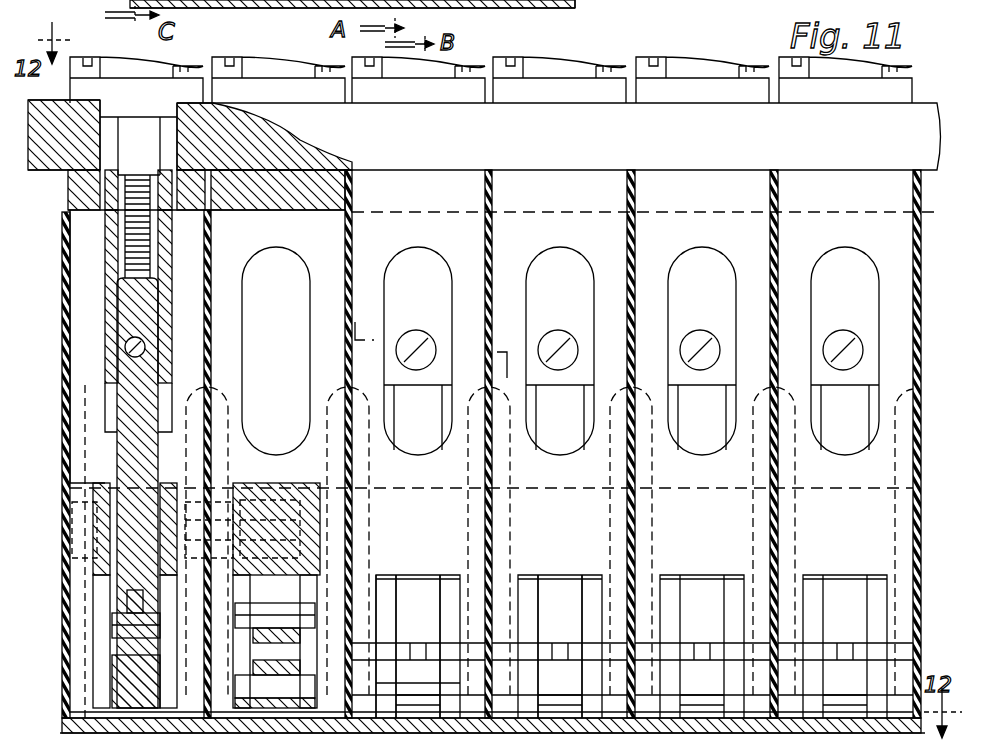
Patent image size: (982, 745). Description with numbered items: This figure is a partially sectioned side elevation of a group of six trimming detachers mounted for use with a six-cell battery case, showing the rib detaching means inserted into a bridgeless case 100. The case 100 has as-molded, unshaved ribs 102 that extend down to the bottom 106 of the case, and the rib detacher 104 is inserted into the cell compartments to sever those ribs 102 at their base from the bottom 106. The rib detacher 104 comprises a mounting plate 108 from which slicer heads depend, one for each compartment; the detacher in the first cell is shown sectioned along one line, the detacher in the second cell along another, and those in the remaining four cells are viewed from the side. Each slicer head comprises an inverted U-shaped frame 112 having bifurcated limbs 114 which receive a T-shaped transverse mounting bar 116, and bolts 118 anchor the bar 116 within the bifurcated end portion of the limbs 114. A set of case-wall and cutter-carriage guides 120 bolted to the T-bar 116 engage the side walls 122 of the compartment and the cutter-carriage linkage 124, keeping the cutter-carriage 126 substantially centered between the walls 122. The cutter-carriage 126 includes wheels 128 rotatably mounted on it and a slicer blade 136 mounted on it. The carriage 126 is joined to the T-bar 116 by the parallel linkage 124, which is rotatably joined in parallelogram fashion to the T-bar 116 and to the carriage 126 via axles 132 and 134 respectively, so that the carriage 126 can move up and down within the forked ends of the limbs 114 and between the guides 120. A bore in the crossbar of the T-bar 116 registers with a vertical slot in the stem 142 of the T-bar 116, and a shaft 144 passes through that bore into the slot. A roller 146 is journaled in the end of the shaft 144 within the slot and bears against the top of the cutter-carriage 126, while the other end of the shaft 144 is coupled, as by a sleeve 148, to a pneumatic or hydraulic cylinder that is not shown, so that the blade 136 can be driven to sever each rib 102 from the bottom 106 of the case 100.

The bridgeless case 100 is at (928, 252).
The unshaved ribs 102 is at (63, 410).
The rib detacher 104 is at (658, 100).
The bottom of the case 106 is at (240, 4).
The mounting plate 108 is at (880, 125).
The inverted U-shaped frame 112 is at (352, 190).
The bifurcated limbs 114 is at (330, 532).
The T-shaped transverse mounting bar 116 is at (172, 483).
The bolts 118 is at (312, 500).
The case-wall and cutter-carriage guides 120 is at (190, 520).
The side walls 122 is at (56, 256).
The cutter-carriage linkage 124 is at (108, 620).
The cutter-carriage 126 is at (120, 660).
The wheels 128 is at (480, 700).
The axles 132 is at (352, 586).
The axles 134 is at (352, 683).
The slicer blade 136 is at (115, 485).
The stem 142 is at (332, 578).
The shaft 144 is at (145, 373).
The roller 146 is at (135, 590).
The sleeve 148 is at (166, 292).